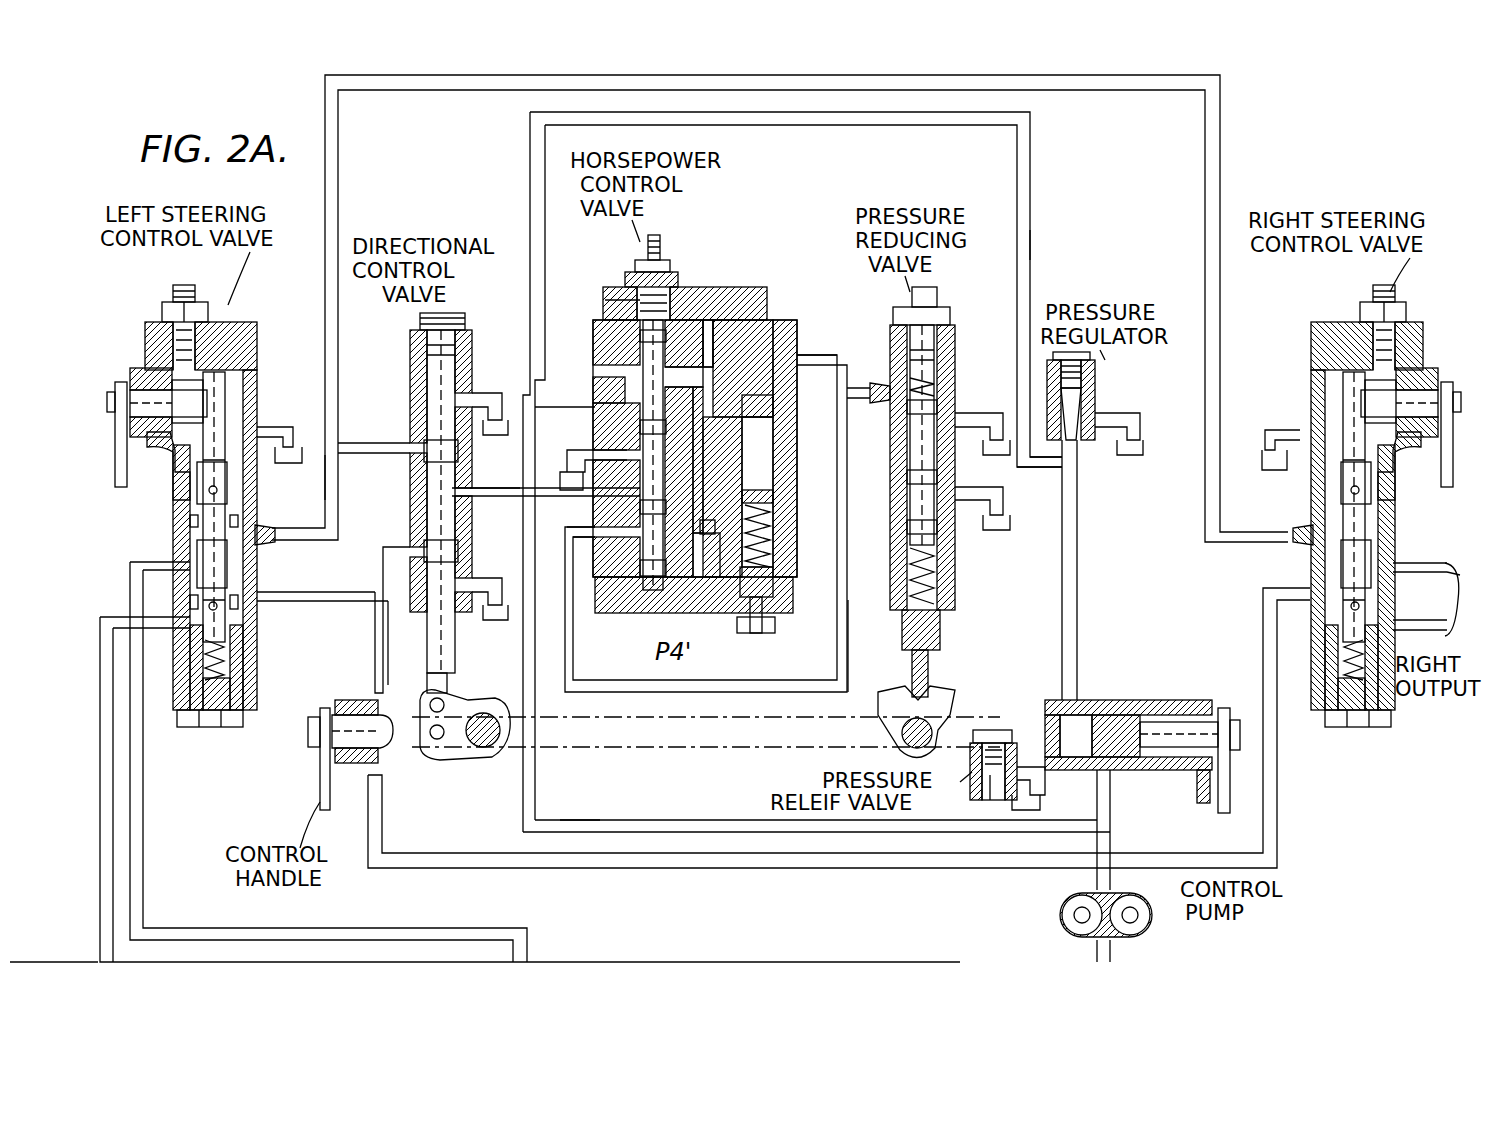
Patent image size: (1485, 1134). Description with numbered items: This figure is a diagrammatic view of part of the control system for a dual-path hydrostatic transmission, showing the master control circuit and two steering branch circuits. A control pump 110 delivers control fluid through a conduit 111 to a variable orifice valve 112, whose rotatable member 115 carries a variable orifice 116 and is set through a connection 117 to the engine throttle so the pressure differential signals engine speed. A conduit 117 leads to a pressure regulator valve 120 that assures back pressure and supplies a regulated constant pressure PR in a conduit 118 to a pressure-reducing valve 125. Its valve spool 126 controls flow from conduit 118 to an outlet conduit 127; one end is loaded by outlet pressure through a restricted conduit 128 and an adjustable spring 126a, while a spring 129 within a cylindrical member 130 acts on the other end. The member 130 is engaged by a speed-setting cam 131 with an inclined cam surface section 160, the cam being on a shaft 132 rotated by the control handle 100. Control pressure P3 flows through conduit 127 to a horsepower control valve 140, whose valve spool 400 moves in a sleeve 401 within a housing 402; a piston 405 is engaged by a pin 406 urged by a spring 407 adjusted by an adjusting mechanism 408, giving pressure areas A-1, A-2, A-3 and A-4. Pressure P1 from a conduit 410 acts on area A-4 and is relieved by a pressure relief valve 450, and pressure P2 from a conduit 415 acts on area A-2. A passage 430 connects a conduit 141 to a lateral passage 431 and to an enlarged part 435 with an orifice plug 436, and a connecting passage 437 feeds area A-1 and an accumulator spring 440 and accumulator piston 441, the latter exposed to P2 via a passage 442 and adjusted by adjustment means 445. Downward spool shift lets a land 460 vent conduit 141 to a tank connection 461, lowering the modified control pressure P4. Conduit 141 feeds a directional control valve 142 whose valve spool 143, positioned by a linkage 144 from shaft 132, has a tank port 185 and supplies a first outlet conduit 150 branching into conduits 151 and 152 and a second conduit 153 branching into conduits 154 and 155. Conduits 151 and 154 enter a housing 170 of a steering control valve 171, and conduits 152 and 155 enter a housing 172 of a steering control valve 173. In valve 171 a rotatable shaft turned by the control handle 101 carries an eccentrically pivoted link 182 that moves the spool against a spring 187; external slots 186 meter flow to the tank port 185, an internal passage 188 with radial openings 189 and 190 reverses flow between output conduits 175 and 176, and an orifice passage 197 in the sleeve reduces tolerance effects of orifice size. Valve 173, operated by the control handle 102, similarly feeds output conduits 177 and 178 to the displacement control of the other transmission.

The control handle 100 is at (320, 786).
The control handle 101 is at (146, 462).
The control handle 102 is at (1440, 478).
The control pump 110 is at (1060, 915).
The conduit 111 is at (1112, 820).
The variable orifice valve 112 is at (1102, 700).
The rotatable member 115 is at (1172, 722).
The variable orifice 116 is at (1105, 770).
The connection / conduit 117 is at (1080, 572).
The conduit 118 is at (1045, 472).
The pressure regulator valve 120 is at (1097, 396).
The pressure-reducing valve 125 is at (956, 548).
The valve spool 126 is at (907, 470).
The adjustable spring 126a is at (936, 386).
The outlet conduit 127 is at (748, 692).
The conduit 128 is at (868, 386).
The spring 129 is at (936, 580).
The cylindrical member 130 is at (941, 632).
The speed-setting cam 131 is at (946, 702).
The shaft 132 is at (385, 746).
The horsepower control valve 140 is at (786, 322).
The conduit 141 is at (484, 500).
The directional control valve 142 is at (470, 336).
The valve spool 143 is at (445, 628).
The linkage 144 is at (470, 696).
The first outlet conduit 150 is at (360, 448).
The branch conduit 151 is at (330, 472).
The branch conduit 152 is at (1222, 141).
The second conduit 153 is at (390, 528).
The branch conduit 154 is at (372, 596).
The branch conduit 155 is at (800, 870).
The cam surface section 160 is at (884, 690).
The housing 170 is at (228, 422).
The steering control valve 171 is at (262, 316).
The housing 172 is at (1311, 393).
The steering control valve 173 is at (1288, 327).
The conduit 175 is at (112, 829).
The conduit 176 is at (145, 789).
The conduit 177 is at (1418, 562).
The conduit 178 is at (1422, 612).
The eccentrically pivoted link 182 is at (205, 400).
The tank port 185 is at (500, 582).
The external slots 186 is at (258, 585).
The spring 187 is at (219, 728).
The internal passage 188 is at (190, 528).
The radial opening 189 is at (218, 491).
The radial opening 190 is at (240, 602).
The orifice passage 197 is at (218, 606).
The valve spool 400 is at (630, 612).
The sleeve 401 is at (640, 602).
The housing 402 is at (798, 332).
The piston 405 is at (713, 352).
The pin 406 is at (680, 279).
The spring 407 is at (672, 266).
The adjusting mechanism 408 is at (660, 242).
The conduit 410 is at (672, 818).
The conduit 415 is at (1032, 190).
The passage 430 is at (775, 406).
The lateral passage 431 is at (700, 300).
The enlarged part 435 is at (728, 582).
The orifice plug 436 is at (773, 496).
The connecting passage 437 is at (706, 578).
The accumulator spring 440 is at (773, 526).
The accumulator piston 441 is at (773, 456).
The passage 442 is at (802, 348).
The adjustment means 445 is at (762, 632).
The pressure relief valve 450 is at (1046, 781).
The land 460 is at (594, 520).
The tank connection 461 is at (590, 456).
The area A-1 is at (660, 596).
The area A-2 is at (593, 366).
The area A-3 is at (603, 300).
The area A-4 is at (593, 393).
The pressure P1 is at (580, 818).
The pressure P2 is at (1032, 246).
The control pressure P3 is at (849, 633).
The modified control pressure P4 is at (488, 486).
The regulated pressure PR is at (1005, 515).